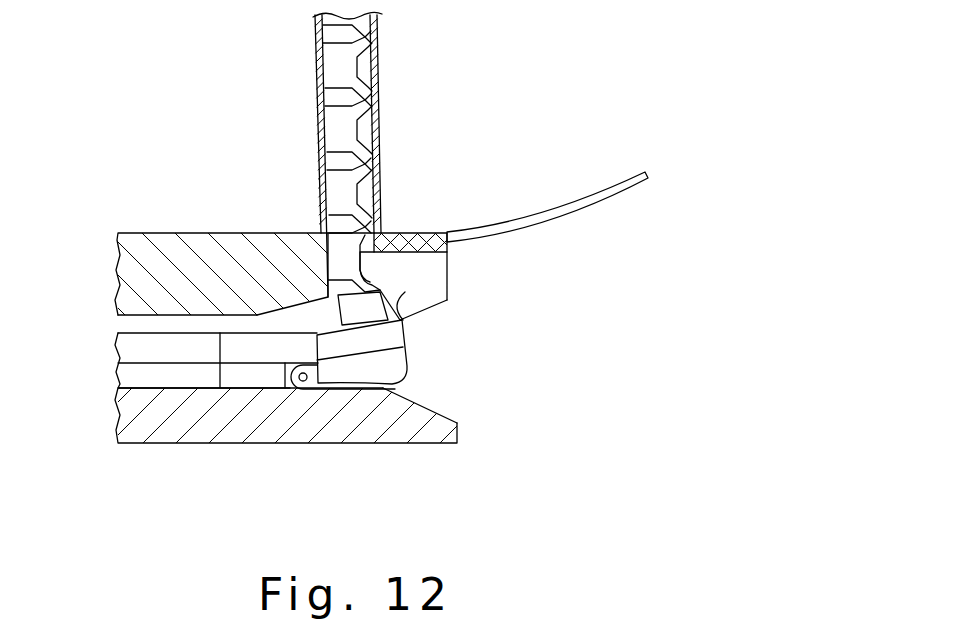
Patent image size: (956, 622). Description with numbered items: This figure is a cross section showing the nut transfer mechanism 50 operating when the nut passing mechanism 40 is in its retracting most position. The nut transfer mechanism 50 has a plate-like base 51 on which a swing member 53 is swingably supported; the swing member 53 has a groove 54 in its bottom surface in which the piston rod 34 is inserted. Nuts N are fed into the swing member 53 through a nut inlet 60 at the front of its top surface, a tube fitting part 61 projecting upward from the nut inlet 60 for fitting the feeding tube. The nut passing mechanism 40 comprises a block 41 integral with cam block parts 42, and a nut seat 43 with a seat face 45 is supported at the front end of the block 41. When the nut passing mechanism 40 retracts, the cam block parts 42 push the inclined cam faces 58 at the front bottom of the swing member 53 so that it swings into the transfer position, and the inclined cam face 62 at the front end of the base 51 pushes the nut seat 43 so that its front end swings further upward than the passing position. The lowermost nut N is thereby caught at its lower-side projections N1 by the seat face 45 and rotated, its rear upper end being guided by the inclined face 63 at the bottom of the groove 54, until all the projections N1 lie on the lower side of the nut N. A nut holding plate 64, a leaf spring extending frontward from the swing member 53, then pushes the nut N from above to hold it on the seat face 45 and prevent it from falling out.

The nut transfer mechanism 50 is at (172, 166).
The swing member 53 is at (138, 233).
The groove 54 is at (120, 312).
The piston rod 34 is at (118, 323).
The block 41 is at (247, 333).
The cam block parts 42 is at (224, 382).
The nut seat 43 is at (400, 375).
The nut passing mechanism 40 is at (408, 362).
The inclined face 63 is at (335, 300).
The base 51 is at (287, 443).
The inclined cam face 62 is at (442, 408).
The tube fitting part 61 is at (377, 90).
The nut inlet 60 is at (330, 262).
The nut N is at (338, 130).
The projections N1 is at (352, 232).
The seat face 45 is at (442, 293).
The inclined cam faces 58 is at (430, 312).
The nut holding plate 64 is at (563, 200).